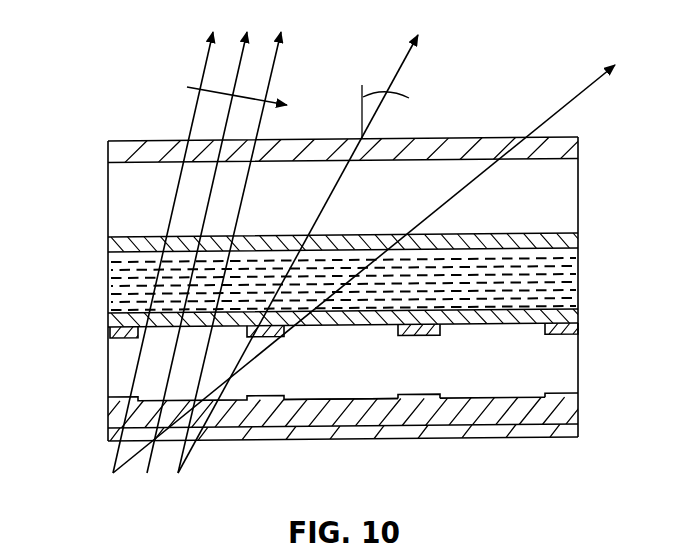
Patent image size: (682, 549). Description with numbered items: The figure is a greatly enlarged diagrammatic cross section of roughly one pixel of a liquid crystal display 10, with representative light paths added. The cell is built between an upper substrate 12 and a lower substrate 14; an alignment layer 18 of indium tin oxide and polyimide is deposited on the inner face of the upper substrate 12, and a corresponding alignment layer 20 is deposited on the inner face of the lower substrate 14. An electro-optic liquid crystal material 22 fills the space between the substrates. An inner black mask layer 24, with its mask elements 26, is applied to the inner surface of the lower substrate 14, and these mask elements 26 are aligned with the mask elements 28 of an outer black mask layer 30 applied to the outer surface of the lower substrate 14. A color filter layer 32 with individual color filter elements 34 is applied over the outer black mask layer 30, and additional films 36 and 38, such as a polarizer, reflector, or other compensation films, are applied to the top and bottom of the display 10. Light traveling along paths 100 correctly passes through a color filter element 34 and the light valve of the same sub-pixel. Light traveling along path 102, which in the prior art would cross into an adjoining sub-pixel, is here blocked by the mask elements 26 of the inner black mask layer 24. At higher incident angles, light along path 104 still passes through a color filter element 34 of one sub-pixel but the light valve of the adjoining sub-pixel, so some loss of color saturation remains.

The liquid crystal display 10 is at (115, 93).
The light paths 100 is at (271, 72).
The light path 102 is at (401, 65).
The light path 104 is at (574, 98).
The additional film 36 is at (157, 141).
The upper substrate 12 is at (390, 214).
The alignment layer 18 is at (150, 241).
The electro-optic liquid crystal material 22 is at (470, 268).
The alignment layer 20 is at (232, 318).
The inner black mask layer 24 is at (103, 332).
The mask elements 26 is at (546, 333).
The lower substrate 14 is at (405, 378).
The color filter layer 32 is at (314, 392).
The mask elements 28 is at (556, 392).
The outer black mask layer 30 is at (103, 398).
The color filter elements 34 is at (303, 441).
The additional film 38 is at (530, 432).